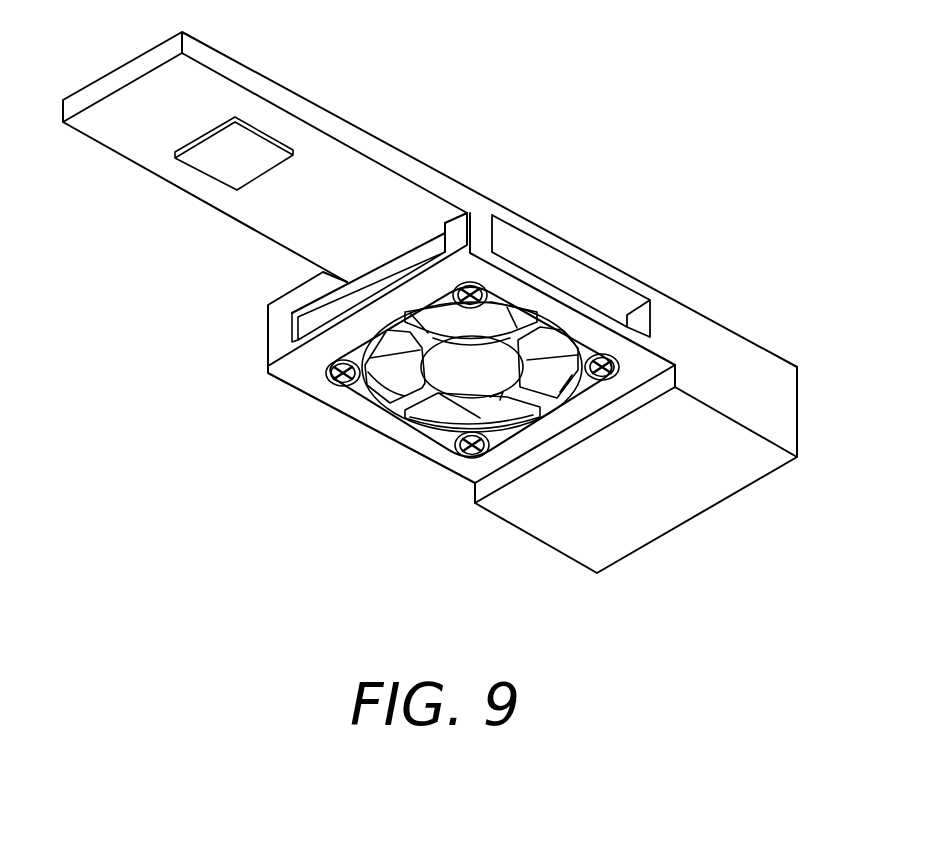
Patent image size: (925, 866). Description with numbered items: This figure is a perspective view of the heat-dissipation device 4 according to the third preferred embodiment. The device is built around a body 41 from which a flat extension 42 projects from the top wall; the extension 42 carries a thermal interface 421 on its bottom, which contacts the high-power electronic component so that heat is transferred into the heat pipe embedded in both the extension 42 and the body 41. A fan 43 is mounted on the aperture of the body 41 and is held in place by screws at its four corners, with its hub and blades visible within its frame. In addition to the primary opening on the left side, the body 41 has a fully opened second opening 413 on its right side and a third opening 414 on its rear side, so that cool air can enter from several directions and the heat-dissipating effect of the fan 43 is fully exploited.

The heat-dissipation device 4 is at (456, 302).
The body 41 is at (500, 393).
The extension 42 is at (430, 199).
The fan 43 is at (433, 432).
The second opening 413 is at (297, 330).
The third opening 414 is at (628, 296).
The thermal interface 421 is at (222, 166).